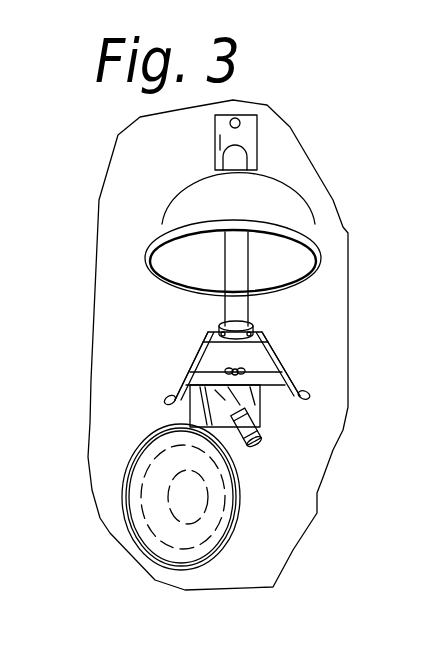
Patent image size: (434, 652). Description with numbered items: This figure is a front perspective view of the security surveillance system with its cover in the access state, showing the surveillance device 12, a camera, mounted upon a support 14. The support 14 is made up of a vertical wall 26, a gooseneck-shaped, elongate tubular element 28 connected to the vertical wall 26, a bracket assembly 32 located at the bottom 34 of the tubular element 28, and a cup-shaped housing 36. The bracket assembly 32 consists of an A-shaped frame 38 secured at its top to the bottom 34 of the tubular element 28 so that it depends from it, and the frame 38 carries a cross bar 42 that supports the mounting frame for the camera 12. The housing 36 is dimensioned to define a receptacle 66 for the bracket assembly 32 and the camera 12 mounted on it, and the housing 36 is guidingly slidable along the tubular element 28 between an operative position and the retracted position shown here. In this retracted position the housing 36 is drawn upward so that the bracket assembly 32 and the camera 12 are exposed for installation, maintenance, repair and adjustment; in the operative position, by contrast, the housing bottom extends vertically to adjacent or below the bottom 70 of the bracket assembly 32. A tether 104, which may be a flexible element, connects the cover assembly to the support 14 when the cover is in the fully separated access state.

The surveillance device 12 is at (257, 427).
The support 14 is at (268, 140).
The vertical wall 26 is at (152, 191).
The tubular element 28 is at (240, 162).
The bracket assembly 32 is at (278, 352).
The bottom of the tubular element 34 is at (240, 316).
The cup-shaped housing 36 is at (173, 220).
The A-shaped frame 38 is at (205, 378).
The cross bar 42 is at (192, 365).
The receptacle 66 is at (283, 263).
The bottom of the bracket assembly 70 is at (303, 400).
The tether 104 is at (190, 420).